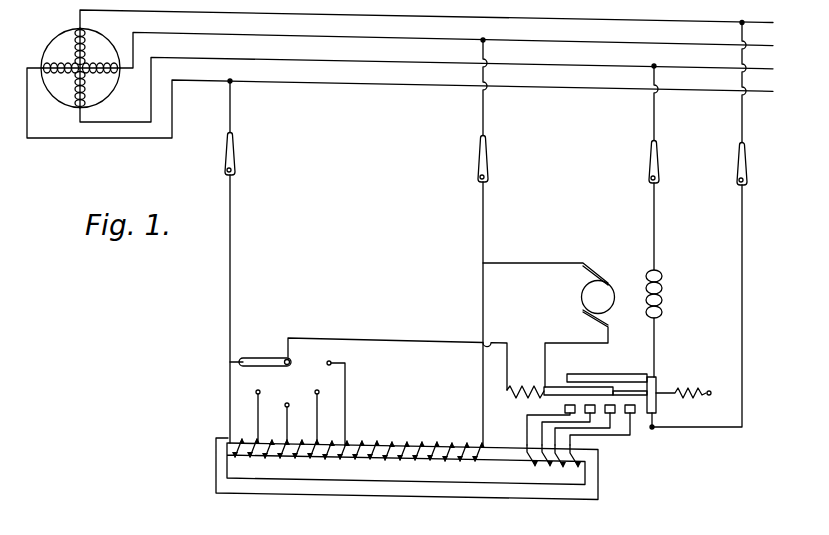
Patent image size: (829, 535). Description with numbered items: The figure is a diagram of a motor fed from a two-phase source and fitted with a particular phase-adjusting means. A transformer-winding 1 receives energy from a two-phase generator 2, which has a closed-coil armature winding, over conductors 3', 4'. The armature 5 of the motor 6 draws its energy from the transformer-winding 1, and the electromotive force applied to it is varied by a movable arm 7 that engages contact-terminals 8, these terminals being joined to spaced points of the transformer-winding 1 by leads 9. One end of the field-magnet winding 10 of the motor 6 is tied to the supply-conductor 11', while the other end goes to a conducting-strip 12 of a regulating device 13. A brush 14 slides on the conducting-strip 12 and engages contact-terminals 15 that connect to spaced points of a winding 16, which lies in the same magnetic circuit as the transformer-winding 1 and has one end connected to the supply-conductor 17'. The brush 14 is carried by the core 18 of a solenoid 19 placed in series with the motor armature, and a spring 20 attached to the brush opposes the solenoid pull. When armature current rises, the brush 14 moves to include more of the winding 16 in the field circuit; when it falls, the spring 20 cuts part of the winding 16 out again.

The transformer-winding 1 is at (389, 438).
The two-phase generator 2 is at (42, 42).
The conductor 3' is at (400, 103).
The conductor 4' is at (446, 50).
The armature 5 is at (581, 298).
The motor 6 is at (557, 316).
The movable arm 7 is at (260, 357).
The contact-terminals 8 is at (262, 390).
The leads 9 is at (346, 403).
The field-magnet winding 10 is at (662, 277).
The supply-conductor 11' is at (426, 89).
The conducting-strip 12 is at (607, 366).
The regulating device 13 is at (672, 381).
The brush 14 is at (655, 377).
The contact-terminals 15 is at (613, 413).
The winding 16 is at (577, 462).
The supply-conductor 17' is at (426, 26).
The core 18 is at (557, 384).
The solenoid 19 is at (513, 397).
The spring 20 is at (705, 396).